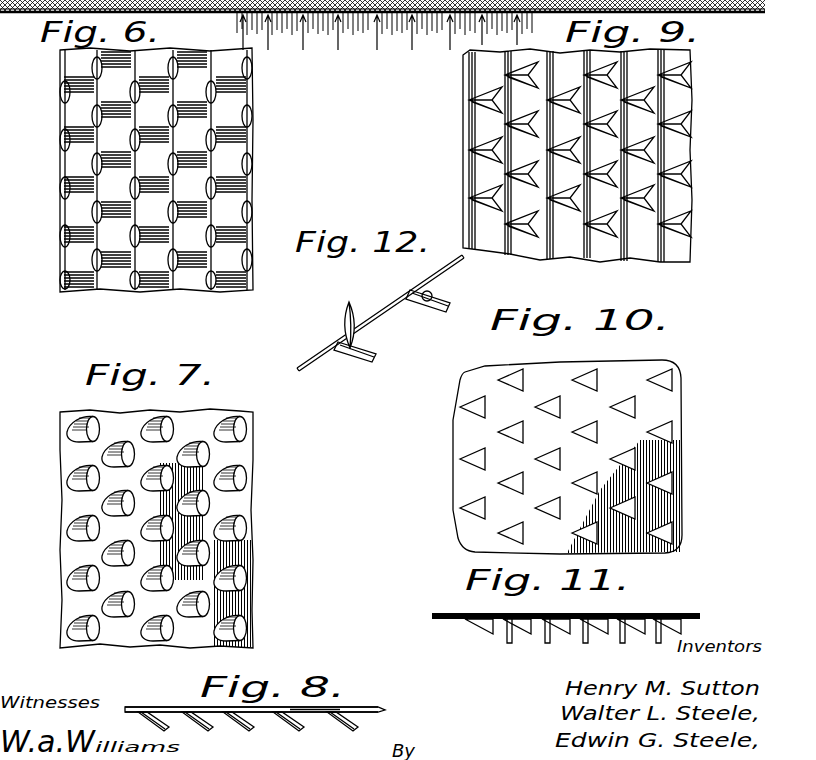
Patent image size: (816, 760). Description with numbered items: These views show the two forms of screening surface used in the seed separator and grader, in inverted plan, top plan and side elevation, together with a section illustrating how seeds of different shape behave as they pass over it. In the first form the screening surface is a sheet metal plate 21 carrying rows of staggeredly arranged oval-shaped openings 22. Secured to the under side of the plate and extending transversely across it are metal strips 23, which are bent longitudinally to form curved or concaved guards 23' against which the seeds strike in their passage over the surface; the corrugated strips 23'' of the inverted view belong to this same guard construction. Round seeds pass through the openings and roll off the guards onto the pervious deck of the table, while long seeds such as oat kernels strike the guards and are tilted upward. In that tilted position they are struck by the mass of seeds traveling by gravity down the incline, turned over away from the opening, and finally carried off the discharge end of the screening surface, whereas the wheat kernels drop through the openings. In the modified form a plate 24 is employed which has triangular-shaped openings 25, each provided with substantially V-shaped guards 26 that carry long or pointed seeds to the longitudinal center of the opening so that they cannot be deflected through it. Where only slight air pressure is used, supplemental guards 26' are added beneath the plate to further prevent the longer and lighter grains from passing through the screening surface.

In FIG. 12, the sheet metal plate 21 is at (380, 315).
In FIG. 7, the sheet metal plate 21 is at (250, 455).
In FIG. 12, the oval-shaped openings 22 is at (423, 287).
In FIG. 7, the oval-shaped openings 22 is at (245, 528).
In FIG. 6, the metal strips 23 is at (75, 170).
In FIG. 12, the metal strips 23 is at (407, 324).
In FIG. 8, the metal strips 23 is at (248, 736).
In FIG. 7, the curved or concaved guards 23' is at (60, 528).
In FIG. 6, the corrugated strips 23'' is at (260, 170).
In FIG. 9, the plate 24 is at (690, 206).
In FIG. 10, the plate 24 is at (680, 415).
In FIG. 11, the plate 24 is at (697, 618).
In FIG. 8, the plate 24 is at (360, 708).
In FIG. 10, the triangular-shaped openings 25 is at (650, 483).
In FIG. 11, the triangular-shaped openings 25 is at (630, 617).
In FIG. 9, the V-shaped guards 26 is at (580, 172).
In FIG. 11, the V-shaped guards 26 is at (592, 647).
In FIG. 9, the supplemental guards 26' is at (542, 167).
In FIG. 11, the supplemental guards 26' is at (584, 648).